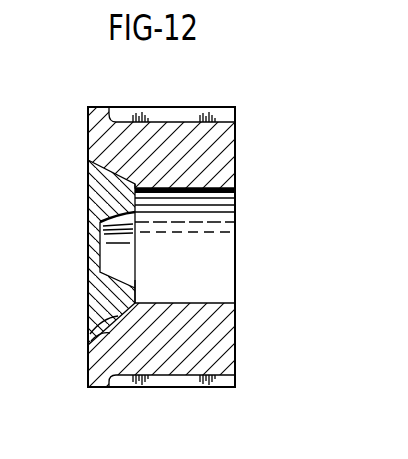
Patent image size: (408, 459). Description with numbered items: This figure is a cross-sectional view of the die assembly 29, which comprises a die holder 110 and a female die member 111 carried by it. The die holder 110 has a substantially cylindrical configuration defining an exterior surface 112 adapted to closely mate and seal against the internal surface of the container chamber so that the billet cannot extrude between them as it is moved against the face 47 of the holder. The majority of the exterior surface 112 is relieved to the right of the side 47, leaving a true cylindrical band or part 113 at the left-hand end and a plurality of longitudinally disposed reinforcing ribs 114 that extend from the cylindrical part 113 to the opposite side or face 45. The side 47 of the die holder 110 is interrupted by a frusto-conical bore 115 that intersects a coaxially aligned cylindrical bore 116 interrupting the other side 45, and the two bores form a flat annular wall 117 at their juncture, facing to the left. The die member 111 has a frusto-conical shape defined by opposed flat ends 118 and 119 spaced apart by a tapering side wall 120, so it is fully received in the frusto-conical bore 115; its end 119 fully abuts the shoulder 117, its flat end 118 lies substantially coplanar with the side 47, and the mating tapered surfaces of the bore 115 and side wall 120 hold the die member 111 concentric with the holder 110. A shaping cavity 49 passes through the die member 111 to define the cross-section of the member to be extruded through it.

The die assembly 29 is at (266, 105).
The side or face 45 is at (236, 140).
The side or face 47 is at (88, 133).
The shaping cavity 49 is at (90, 245).
The die holder 110 is at (224, 165).
The female die member 111 is at (102, 185).
The exterior surface 112 is at (97, 107).
The cylindrical band or part 113 is at (105, 388).
The reinforcing ribs 114 is at (174, 107).
The frusto-conical bore 115 is at (103, 317).
The cylindrical bore 116 is at (214, 303).
The flat annular wall 117 is at (134, 316).
The flat end 118 is at (100, 220).
The flat end 119 is at (136, 283).
The tapering side wall 120 is at (107, 333).